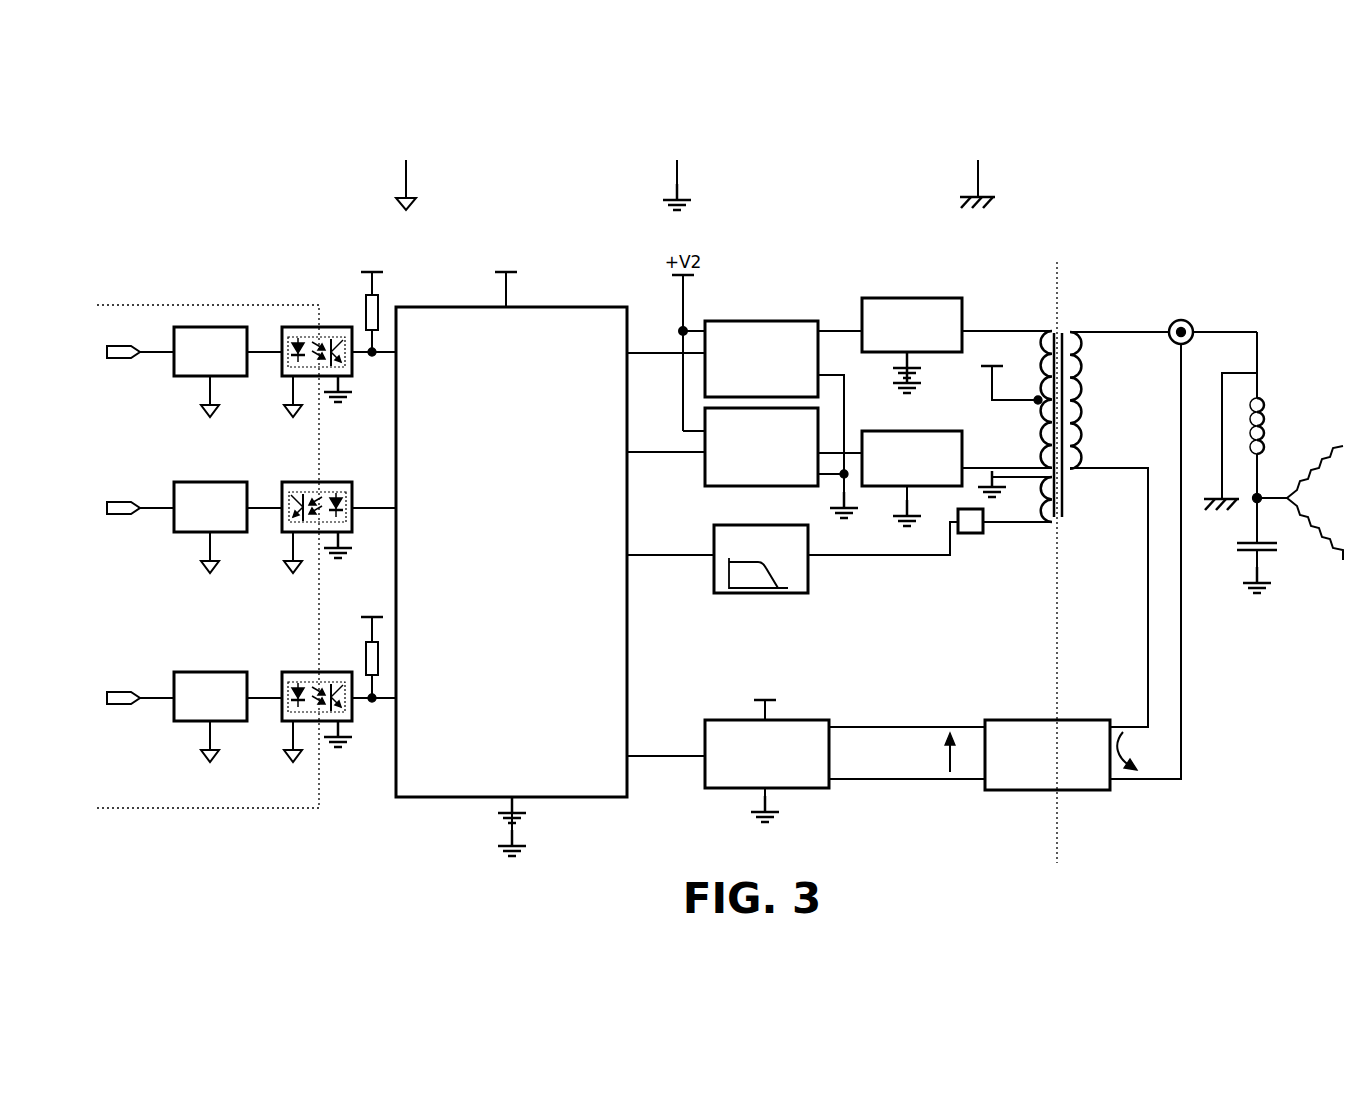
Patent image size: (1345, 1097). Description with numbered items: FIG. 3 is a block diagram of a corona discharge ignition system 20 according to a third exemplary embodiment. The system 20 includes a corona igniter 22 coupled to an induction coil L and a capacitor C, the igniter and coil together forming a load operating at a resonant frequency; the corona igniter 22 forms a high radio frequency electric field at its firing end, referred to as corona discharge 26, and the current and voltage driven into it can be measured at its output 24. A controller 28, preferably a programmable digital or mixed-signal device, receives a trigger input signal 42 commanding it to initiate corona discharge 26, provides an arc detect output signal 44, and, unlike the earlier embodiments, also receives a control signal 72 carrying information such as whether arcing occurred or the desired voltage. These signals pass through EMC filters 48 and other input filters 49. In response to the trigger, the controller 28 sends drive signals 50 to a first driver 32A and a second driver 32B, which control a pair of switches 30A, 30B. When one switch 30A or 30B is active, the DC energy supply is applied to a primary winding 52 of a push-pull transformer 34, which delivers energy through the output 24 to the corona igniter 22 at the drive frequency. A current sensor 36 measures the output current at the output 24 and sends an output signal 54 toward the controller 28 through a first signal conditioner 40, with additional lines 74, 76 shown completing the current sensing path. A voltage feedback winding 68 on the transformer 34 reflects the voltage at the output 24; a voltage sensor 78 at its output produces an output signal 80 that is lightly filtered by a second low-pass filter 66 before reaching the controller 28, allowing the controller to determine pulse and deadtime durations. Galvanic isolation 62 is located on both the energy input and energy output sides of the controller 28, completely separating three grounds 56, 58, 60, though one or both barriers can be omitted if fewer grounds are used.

The corona discharge ignition system 20 is at (1090, 200).
The corona igniter 22 is at (1262, 496).
The output 24 is at (1187, 320).
The corona discharge 26 is at (1333, 452).
The controller 28 is at (566, 307).
The switch 30A is at (912, 298).
The switch 30B is at (917, 431).
The first driver 32A is at (764, 321).
The second driver 32B is at (724, 486).
The transformer 34 is at (1044, 325).
The current sensor 36 is at (1083, 720).
The first signal conditioner 40 is at (803, 788).
The trigger input signal 42 is at (152, 348).
The arc detect output signal 44 is at (152, 506).
The EMC filters 48 is at (210, 327).
The input filters 49 is at (330, 327).
The drive signals 50 is at (658, 352).
The primary winding 52 is at (1025, 375).
The output signal 54 is at (668, 758).
The ground 56 is at (403, 181).
The ground 58 is at (674, 182).
The ground 60 is at (1220, 475).
The galvanic isolation 62 is at (183, 810).
The second low-pass filter 66 is at (808, 585).
The voltage feedback winding 68 is at (1030, 522).
The control signal 72 is at (150, 696).
The feedback line 74 is at (1163, 781).
The signal lines 76 is at (913, 781).
The voltage sensor 78 is at (968, 533).
The output signal 80 is at (905, 557).
The induction coil L is at (1265, 412).
The capacitor C is at (1272, 548).